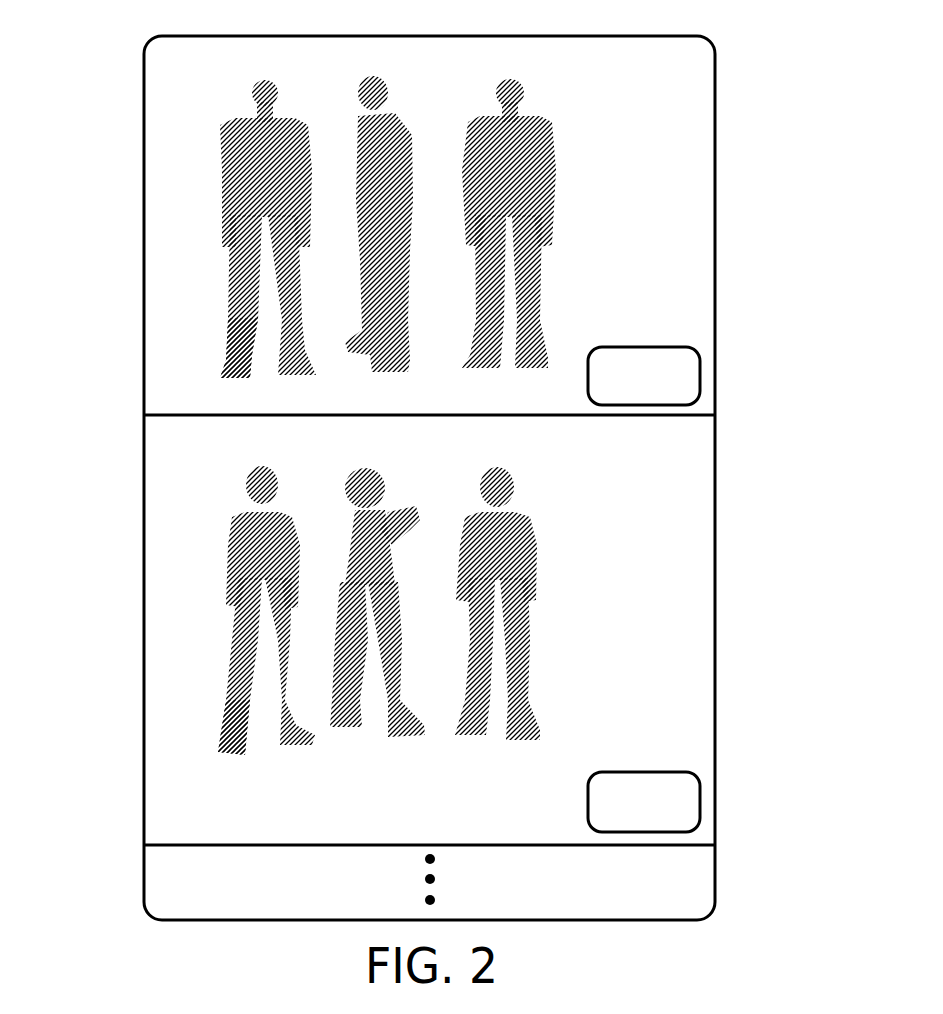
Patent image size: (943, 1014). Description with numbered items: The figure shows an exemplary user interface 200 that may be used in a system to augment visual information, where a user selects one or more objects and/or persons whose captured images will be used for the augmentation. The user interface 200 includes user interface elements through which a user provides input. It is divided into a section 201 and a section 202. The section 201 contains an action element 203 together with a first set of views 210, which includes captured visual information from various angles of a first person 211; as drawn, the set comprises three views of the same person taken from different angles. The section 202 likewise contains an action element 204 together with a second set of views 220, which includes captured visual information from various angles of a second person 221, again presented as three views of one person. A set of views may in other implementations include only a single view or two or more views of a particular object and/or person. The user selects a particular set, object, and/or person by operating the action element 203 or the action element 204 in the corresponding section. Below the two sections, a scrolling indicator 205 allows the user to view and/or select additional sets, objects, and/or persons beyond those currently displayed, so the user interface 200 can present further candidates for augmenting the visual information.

The user interface 200 is at (432, 460).
The section 201 is at (667, 128).
The section 202 is at (665, 500).
The action element 203 is at (688, 350).
The action element 204 is at (685, 778).
The scrolling indicator 205 is at (437, 873).
The first set of views 210 is at (202, 228).
The first person 211 is at (232, 330).
The second set of views 220 is at (215, 630).
The second person 221 is at (222, 713).